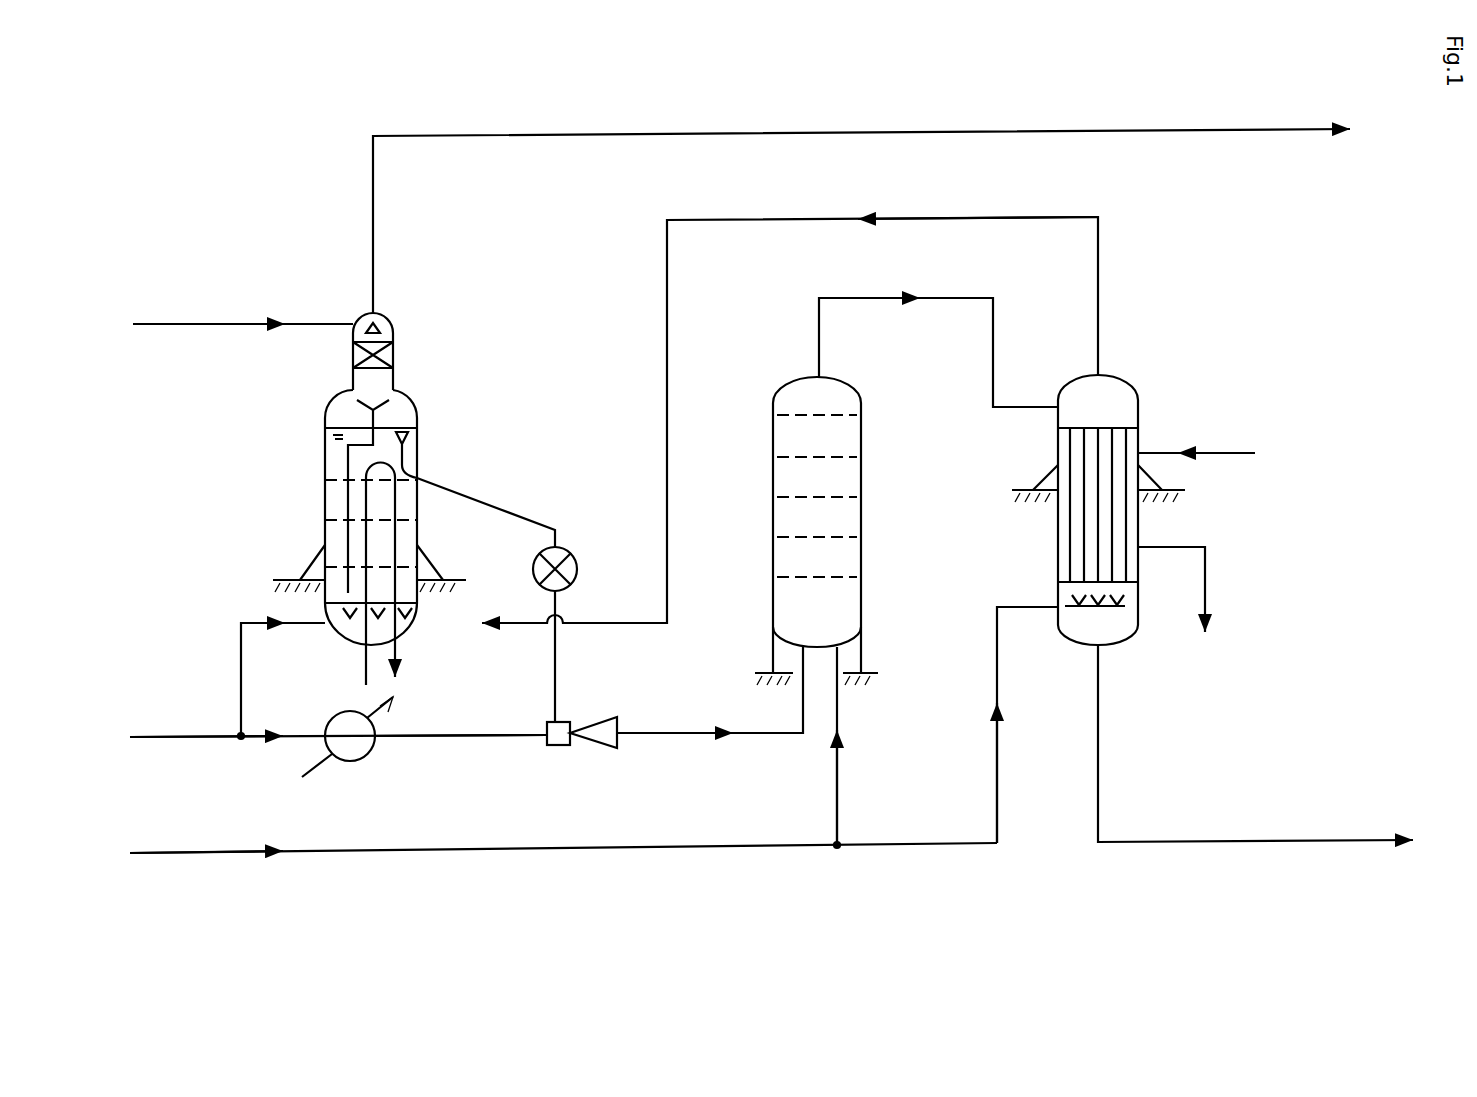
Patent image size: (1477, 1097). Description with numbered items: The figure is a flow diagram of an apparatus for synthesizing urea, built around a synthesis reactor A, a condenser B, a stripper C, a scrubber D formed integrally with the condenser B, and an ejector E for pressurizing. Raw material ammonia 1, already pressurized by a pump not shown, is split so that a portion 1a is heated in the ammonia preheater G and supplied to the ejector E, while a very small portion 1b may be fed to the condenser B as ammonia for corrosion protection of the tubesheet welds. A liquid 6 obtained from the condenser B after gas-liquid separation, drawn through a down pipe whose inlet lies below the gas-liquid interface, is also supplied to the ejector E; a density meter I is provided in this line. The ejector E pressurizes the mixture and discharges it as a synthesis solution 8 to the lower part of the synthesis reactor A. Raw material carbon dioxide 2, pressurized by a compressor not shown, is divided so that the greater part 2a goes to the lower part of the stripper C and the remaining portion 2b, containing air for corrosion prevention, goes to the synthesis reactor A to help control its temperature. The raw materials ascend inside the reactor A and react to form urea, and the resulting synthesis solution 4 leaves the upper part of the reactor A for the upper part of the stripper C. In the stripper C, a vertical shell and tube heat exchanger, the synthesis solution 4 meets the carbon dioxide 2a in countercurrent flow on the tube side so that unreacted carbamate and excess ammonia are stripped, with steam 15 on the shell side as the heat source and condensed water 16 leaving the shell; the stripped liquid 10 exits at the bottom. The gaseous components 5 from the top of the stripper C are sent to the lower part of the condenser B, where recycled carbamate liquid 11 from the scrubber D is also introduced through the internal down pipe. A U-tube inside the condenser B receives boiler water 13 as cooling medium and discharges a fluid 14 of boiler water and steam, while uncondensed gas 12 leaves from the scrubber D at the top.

The raw material ammonia 1 is at (158, 736).
The portion of liquid ammonia 1a is at (440, 732).
The ammonia for corrosion protection 1b is at (241, 643).
The raw material carbon dioxide 2 is at (563, 820).
The greater part of the carbon dioxide 2a is at (997, 787).
The remaining portion of carbon dioxide 2b is at (837, 795).
The synthesis solution 4 is at (1000, 352).
The outlet gas at stripper top 5 is at (983, 215).
The liquid obtained from condenser 6 is at (490, 503).
The liquid at ejector outlet 8 is at (700, 730).
The liquid at stripper outlet 10 is at (1250, 838).
The recycled carbamate liquid 11 is at (187, 322).
The gas obtained from condenser 12 is at (1137, 130).
The cooling medium at condenser inlet 13 is at (360, 660).
The cooling medium at condenser outlet 14 is at (395, 655).
The steam for stripper heating 15 is at (1238, 450).
The condensed water at stripper outlet 16 is at (1207, 597).
The synthesizing reactor A is at (852, 402).
The condenser B is at (417, 420).
The stripper C is at (1133, 395).
The scrubber D is at (393, 352).
The ejector E is at (595, 742).
The ammonia preheater G is at (373, 752).
The density meter I is at (565, 548).